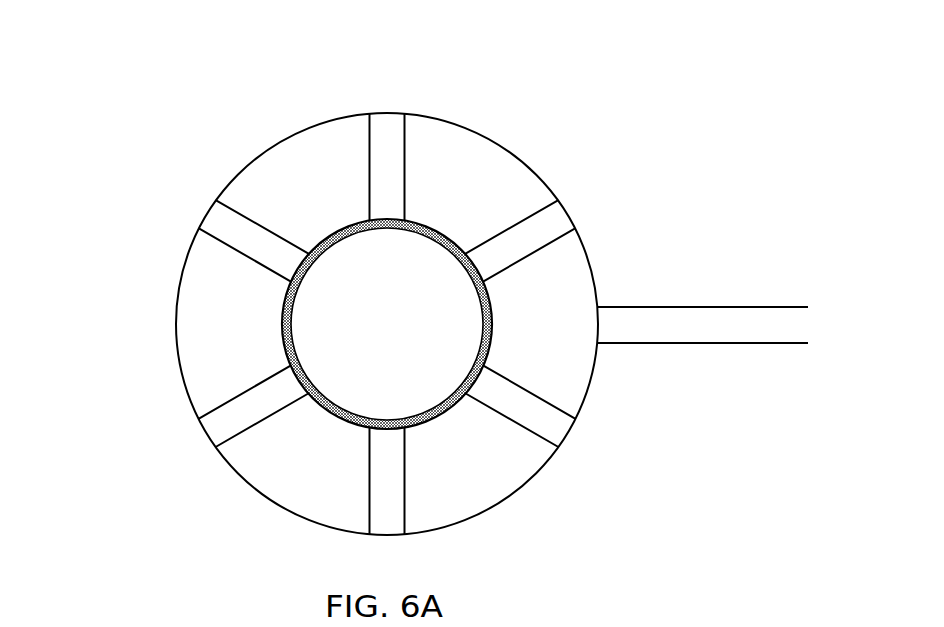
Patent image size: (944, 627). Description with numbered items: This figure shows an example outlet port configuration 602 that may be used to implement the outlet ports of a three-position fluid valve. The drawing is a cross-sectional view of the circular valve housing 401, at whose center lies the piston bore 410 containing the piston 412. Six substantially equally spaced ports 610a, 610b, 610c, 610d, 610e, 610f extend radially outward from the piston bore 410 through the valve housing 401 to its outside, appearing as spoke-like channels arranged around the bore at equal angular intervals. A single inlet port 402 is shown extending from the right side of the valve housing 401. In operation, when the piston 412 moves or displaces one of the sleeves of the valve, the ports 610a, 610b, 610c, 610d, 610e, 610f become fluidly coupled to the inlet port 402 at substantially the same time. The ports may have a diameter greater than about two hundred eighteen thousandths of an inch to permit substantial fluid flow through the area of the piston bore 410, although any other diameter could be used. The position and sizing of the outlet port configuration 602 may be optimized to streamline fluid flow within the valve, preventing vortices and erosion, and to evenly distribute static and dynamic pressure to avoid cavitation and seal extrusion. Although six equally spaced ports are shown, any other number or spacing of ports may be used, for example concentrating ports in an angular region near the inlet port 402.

The outlet port configuration 602 is at (122, 52).
The valve housing 401 is at (280, 168).
The inlet port 402 is at (775, 307).
The piston bore 410 is at (283, 318).
The piston 412 is at (472, 318).
The port 610a is at (385, 123).
The port 610b is at (220, 220).
The port 610c is at (222, 430).
The port 610d is at (390, 528).
The port 610e is at (560, 428).
The port 610f is at (557, 220).